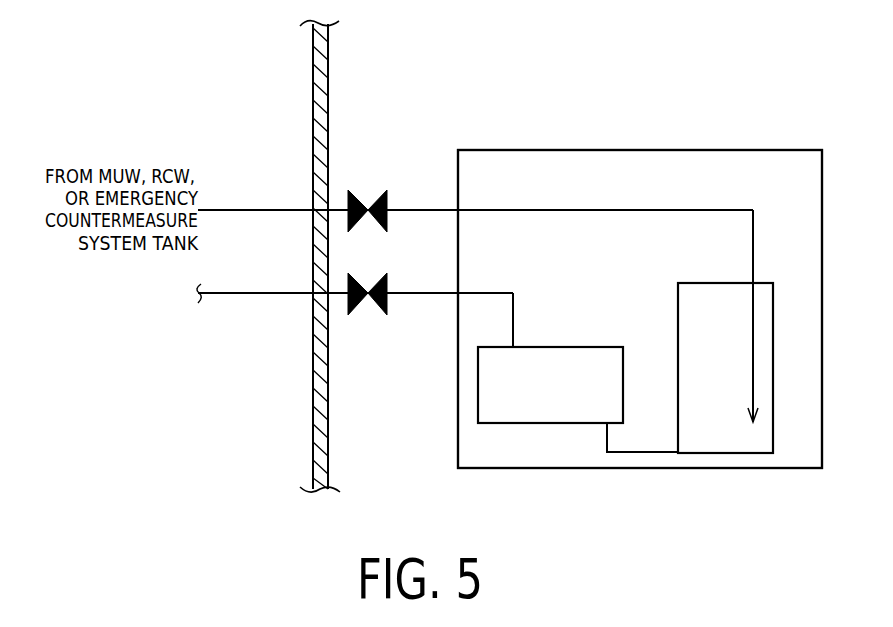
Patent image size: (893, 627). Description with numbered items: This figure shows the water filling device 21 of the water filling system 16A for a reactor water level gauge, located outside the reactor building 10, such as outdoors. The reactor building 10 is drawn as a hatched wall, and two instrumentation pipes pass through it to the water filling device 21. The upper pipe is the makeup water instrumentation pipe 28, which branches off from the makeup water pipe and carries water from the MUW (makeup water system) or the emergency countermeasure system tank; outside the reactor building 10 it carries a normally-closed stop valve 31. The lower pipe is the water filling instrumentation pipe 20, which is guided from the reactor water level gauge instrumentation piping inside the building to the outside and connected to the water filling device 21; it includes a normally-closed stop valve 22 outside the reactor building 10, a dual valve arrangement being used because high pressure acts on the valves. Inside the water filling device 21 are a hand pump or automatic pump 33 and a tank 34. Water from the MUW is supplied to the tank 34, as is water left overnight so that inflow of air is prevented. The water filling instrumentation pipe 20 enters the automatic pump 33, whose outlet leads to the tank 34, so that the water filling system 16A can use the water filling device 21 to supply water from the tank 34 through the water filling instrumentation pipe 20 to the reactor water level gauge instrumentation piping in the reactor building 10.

The reactor building 10 is at (329, 62).
The water filling system for a reactor water level gauge 16A is at (460, 140).
The water filling instrumentation pipe 20 is at (246, 293).
The water filling device 21 is at (720, 150).
The stop valve 22 is at (387, 280).
The makeup water instrumentation pipe 28 is at (246, 210).
The stop valve 31 is at (387, 197).
The automatic pump 33 is at (588, 347).
The tank 34 is at (770, 283).